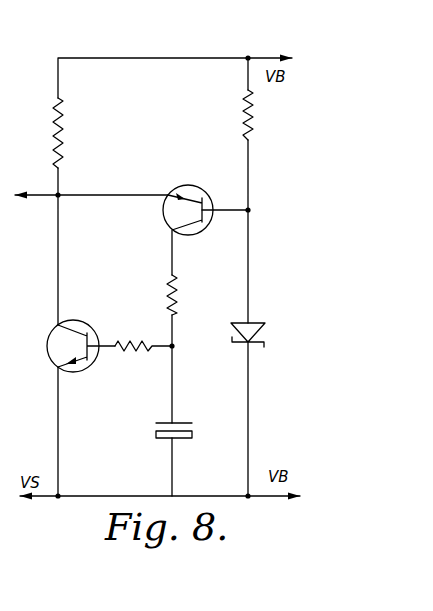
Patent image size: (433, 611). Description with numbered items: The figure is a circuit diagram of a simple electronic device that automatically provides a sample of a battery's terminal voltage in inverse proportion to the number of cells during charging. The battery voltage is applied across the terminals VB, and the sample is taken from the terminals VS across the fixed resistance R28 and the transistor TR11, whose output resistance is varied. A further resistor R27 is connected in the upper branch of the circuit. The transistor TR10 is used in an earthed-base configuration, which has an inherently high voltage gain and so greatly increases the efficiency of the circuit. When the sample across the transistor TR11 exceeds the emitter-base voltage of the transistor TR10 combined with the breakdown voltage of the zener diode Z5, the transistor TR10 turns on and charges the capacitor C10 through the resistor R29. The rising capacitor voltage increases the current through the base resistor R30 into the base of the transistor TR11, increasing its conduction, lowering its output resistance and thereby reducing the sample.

The fixed resistance R28 is at (77, 133).
The resistor R27 is at (218, 115).
The transistor TR10 is at (175, 190).
The transistor TR11 is at (95, 302).
The resistor R29 is at (176, 312).
The zener diode Z5 is at (256, 323).
The base resistor R30 is at (130, 357).
The capacitor C10 is at (152, 430).